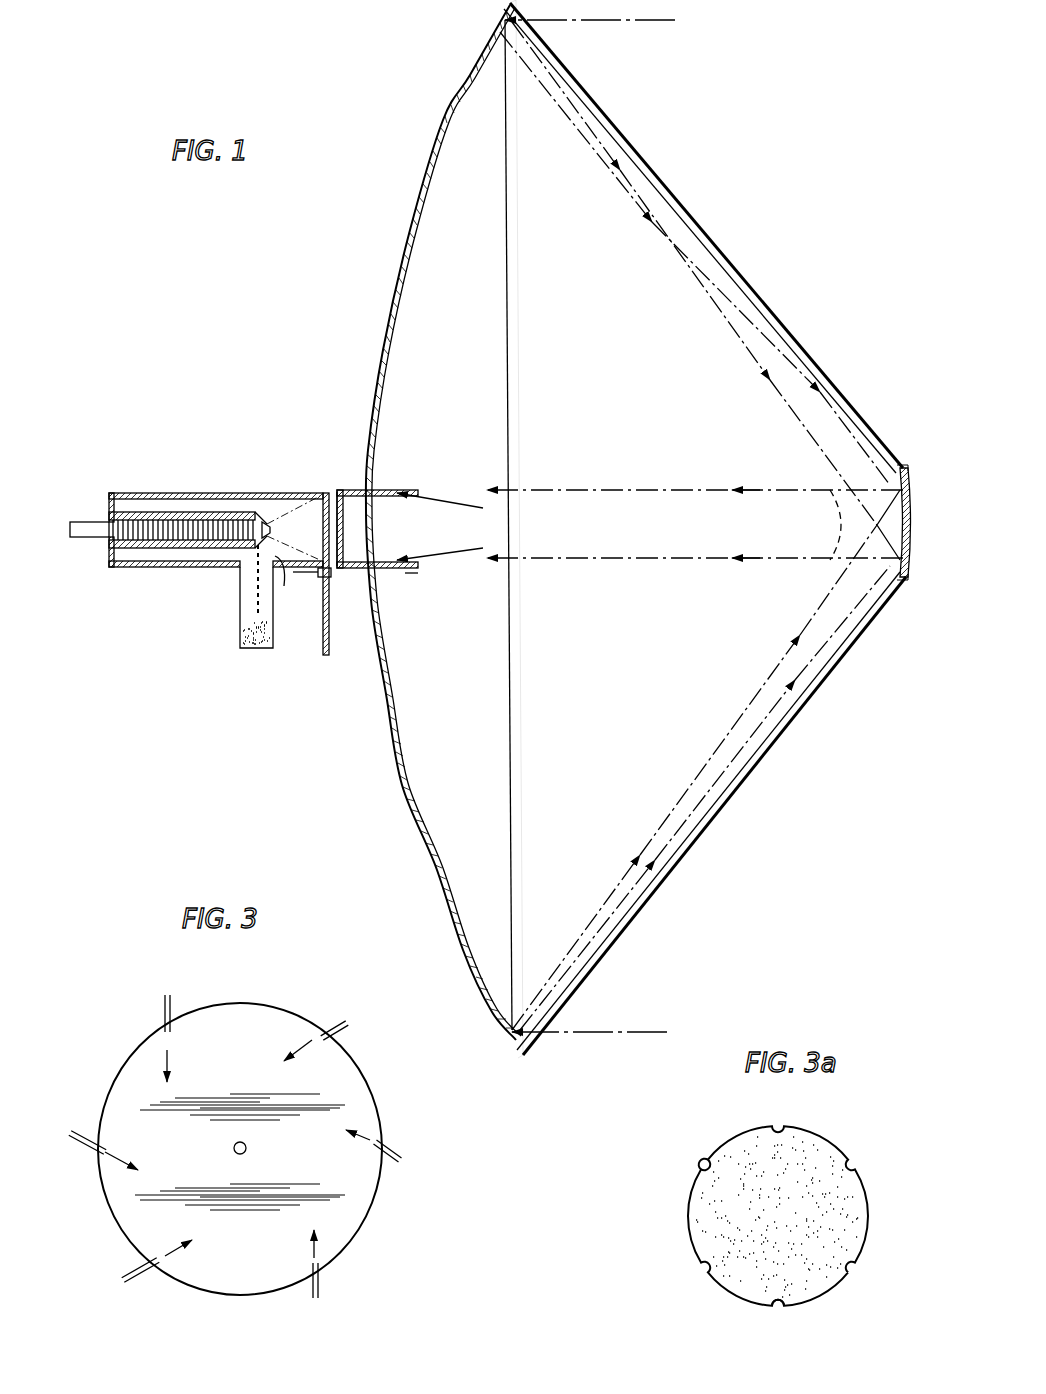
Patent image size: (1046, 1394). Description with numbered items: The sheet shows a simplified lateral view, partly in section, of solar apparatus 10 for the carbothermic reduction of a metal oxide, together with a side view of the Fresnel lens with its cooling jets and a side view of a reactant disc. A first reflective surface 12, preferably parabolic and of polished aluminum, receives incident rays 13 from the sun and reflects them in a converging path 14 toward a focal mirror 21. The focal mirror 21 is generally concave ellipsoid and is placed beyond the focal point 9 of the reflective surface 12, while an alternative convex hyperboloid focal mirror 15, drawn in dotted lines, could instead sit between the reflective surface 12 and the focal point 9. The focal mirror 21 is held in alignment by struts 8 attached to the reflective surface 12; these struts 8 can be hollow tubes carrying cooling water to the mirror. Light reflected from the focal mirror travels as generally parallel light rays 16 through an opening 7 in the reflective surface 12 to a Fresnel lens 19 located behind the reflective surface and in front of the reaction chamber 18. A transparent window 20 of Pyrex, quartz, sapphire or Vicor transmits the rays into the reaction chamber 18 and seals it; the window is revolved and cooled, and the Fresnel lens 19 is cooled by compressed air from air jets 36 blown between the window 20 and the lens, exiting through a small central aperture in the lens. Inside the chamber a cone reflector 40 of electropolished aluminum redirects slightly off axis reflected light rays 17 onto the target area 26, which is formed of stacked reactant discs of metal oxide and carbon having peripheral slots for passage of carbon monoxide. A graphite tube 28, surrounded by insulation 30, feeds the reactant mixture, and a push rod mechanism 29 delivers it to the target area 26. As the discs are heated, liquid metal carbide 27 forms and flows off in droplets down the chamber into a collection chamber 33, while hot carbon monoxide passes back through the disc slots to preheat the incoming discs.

In FIG. 1, the opening 7 is at (362, 532).
In FIG. 1, the struts 8 is at (680, 860).
In FIG. 1, the focal point 9 is at (877, 526).
In FIG. 1, the apparatus 10 is at (745, 241).
In FIG. 1, the first reflective surface 12 is at (402, 785).
In FIG. 1, the incident rays 13 is at (626, 20).
In FIG. 1, the converging path 14 is at (720, 744).
In FIG. 1, the focal mirror 15 is at (838, 522).
In FIG. 1, the light rays 16 is at (616, 488).
In FIG. 1, the off axis reflected light rays 17 is at (463, 507).
In FIG. 1, the reaction chamber 18 is at (238, 480).
In FIG. 1, the Fresnel lens 19 is at (340, 508).
In FIG. 3, the Fresnel lens 19 is at (360, 1098).
In FIG. 1, the transparent window 20 is at (330, 597).
In FIG. 1, the focal mirror 21 is at (912, 538).
In FIG. 1, the target area 26 is at (155, 526).
In FIG. 3a, the target area 26 is at (698, 1238).
In FIG. 1, the liquid metal carbide 27 is at (258, 596).
In FIG. 1, the graphite tube 28 is at (144, 540).
In FIG. 1, the push rod mechanism 29 is at (70, 529).
In FIG. 1, the insulation 30 is at (195, 512).
In FIG. 1, the collection chamber 33 is at (240, 640).
In FIG. 3, the air jets 36 is at (80, 1140).
In FIG. 1, the cone reflector 40 is at (405, 573).